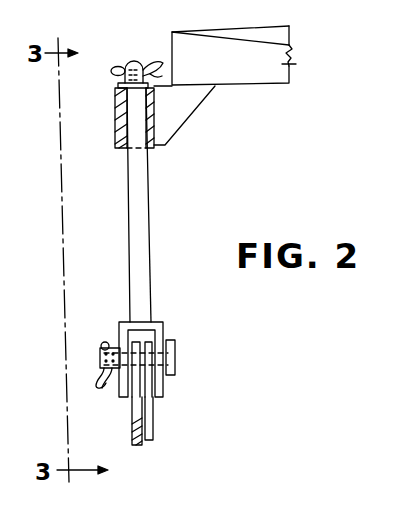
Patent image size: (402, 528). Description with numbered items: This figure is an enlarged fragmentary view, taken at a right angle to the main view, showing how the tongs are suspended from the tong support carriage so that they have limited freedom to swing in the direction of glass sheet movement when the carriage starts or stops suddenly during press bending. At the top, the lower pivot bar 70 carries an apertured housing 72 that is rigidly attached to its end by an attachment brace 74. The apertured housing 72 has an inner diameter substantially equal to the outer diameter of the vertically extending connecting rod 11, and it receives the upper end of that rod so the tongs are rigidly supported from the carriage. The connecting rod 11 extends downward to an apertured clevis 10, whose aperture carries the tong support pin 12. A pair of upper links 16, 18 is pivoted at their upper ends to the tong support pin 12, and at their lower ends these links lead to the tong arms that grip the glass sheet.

The apertured clevis 10 is at (163, 322).
The vertically extending connecting rod 11 is at (149, 213).
The tong support pin 12 is at (175, 357).
The upper link 16 is at (132, 424).
The upper link 18 is at (152, 428).
The lower pivot bar 70 is at (292, 60).
The apertured housing 72 is at (115, 117).
The attachment brace 74 is at (193, 113).